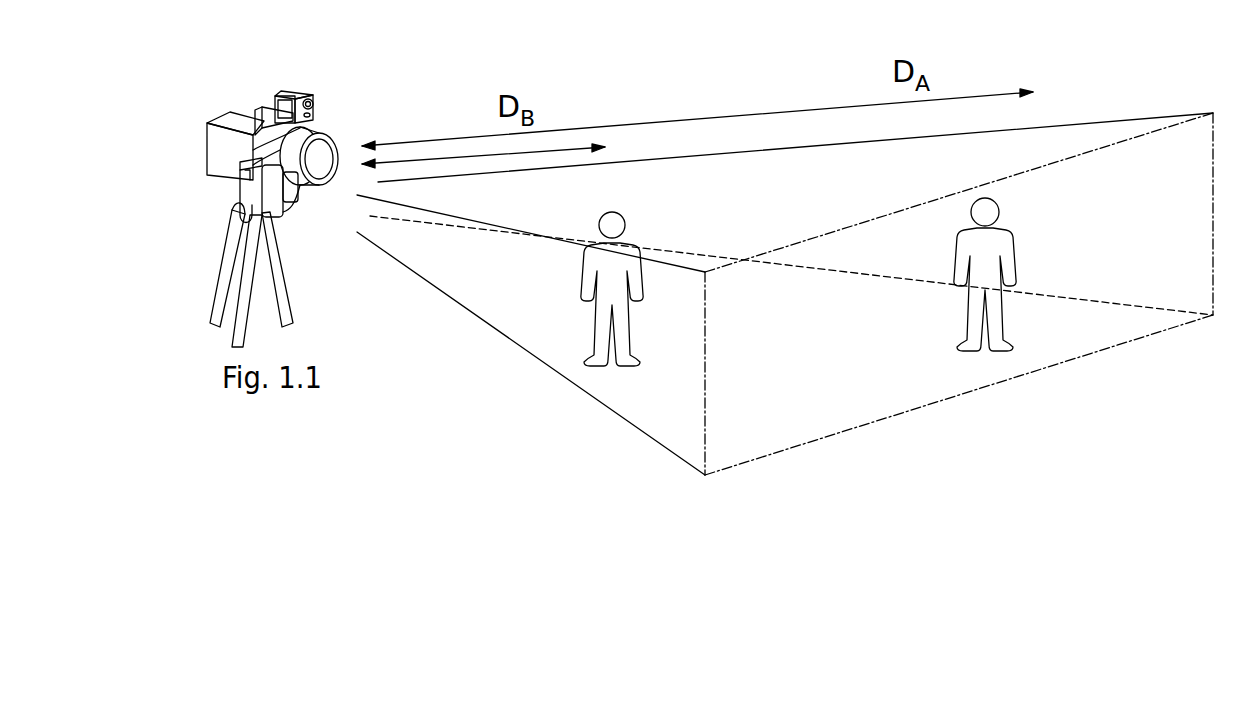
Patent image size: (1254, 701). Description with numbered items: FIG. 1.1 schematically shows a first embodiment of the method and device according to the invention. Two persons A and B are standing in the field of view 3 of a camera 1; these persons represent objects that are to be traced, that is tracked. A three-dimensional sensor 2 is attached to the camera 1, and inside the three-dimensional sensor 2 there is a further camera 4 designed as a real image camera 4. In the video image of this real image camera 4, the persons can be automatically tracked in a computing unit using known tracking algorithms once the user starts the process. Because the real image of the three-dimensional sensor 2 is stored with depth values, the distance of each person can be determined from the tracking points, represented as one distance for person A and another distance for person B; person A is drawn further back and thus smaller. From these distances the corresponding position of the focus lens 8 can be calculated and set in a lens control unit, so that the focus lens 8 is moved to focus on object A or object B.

The camera 1 is at (200, 186).
The 3D sensor 2 is at (287, 107).
The field of view 3 is at (888, 417).
The real image camera 4 is at (313, 117).
The focus lens 8 is at (317, 163).
The person A is at (988, 199).
The person B is at (622, 211).